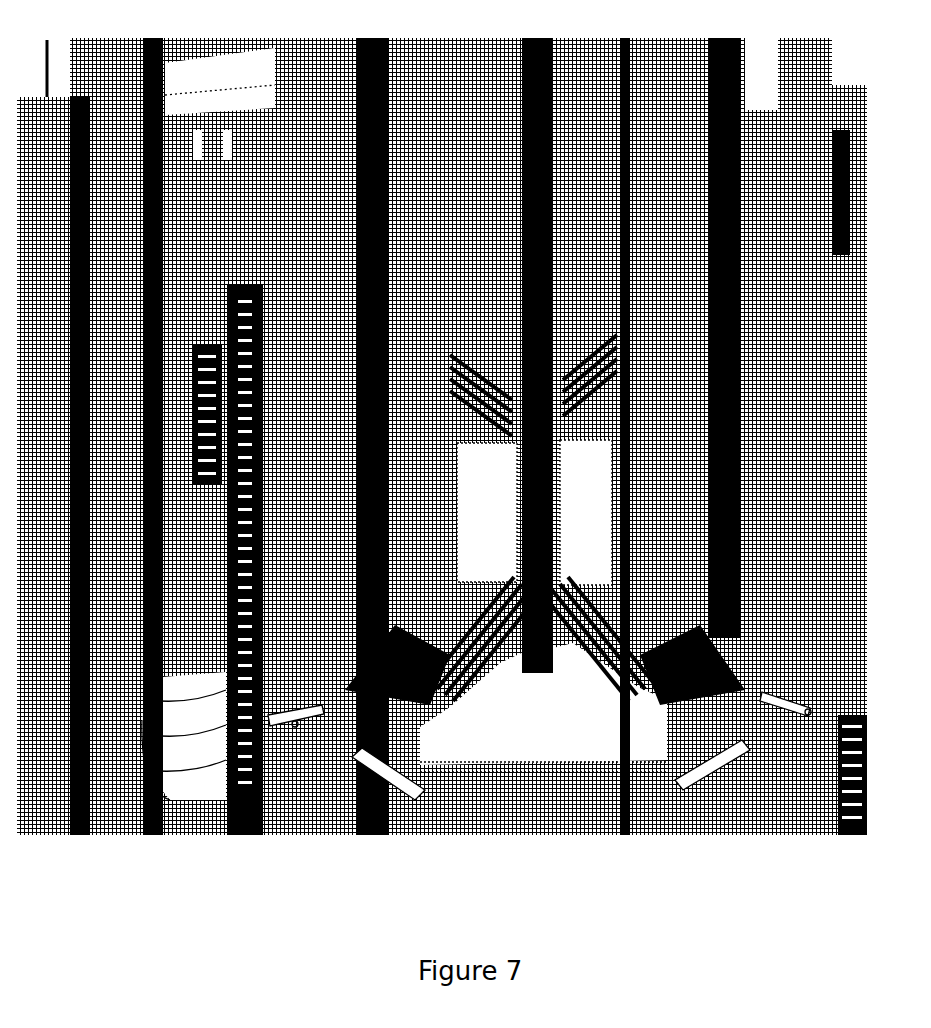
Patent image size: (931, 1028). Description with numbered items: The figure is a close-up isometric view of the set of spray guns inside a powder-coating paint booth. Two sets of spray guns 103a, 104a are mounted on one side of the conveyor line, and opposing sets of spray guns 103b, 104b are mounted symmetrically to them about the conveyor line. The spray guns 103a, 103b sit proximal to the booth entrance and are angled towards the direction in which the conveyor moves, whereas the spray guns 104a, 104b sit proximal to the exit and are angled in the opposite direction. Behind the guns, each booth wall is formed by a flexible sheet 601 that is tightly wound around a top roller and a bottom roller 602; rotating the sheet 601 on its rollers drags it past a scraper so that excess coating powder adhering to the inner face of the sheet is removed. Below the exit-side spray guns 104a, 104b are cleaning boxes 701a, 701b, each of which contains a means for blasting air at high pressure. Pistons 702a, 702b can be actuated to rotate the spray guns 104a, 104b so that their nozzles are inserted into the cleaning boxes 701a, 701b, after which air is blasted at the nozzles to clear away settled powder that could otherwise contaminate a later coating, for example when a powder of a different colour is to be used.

The set of spray guns 103a is at (469, 353).
The opposing set of spray guns 103b is at (576, 347).
The flexible sheet 601 is at (455, 466).
The set of spray guns 104a is at (487, 633).
The opposing set of spray guns 104b is at (588, 637).
The bottom roller 602 is at (452, 710).
The cleaning box 701a is at (392, 812).
The cleaning box 701b is at (697, 815).
The piston 702a is at (314, 738).
The piston 702b is at (790, 712).